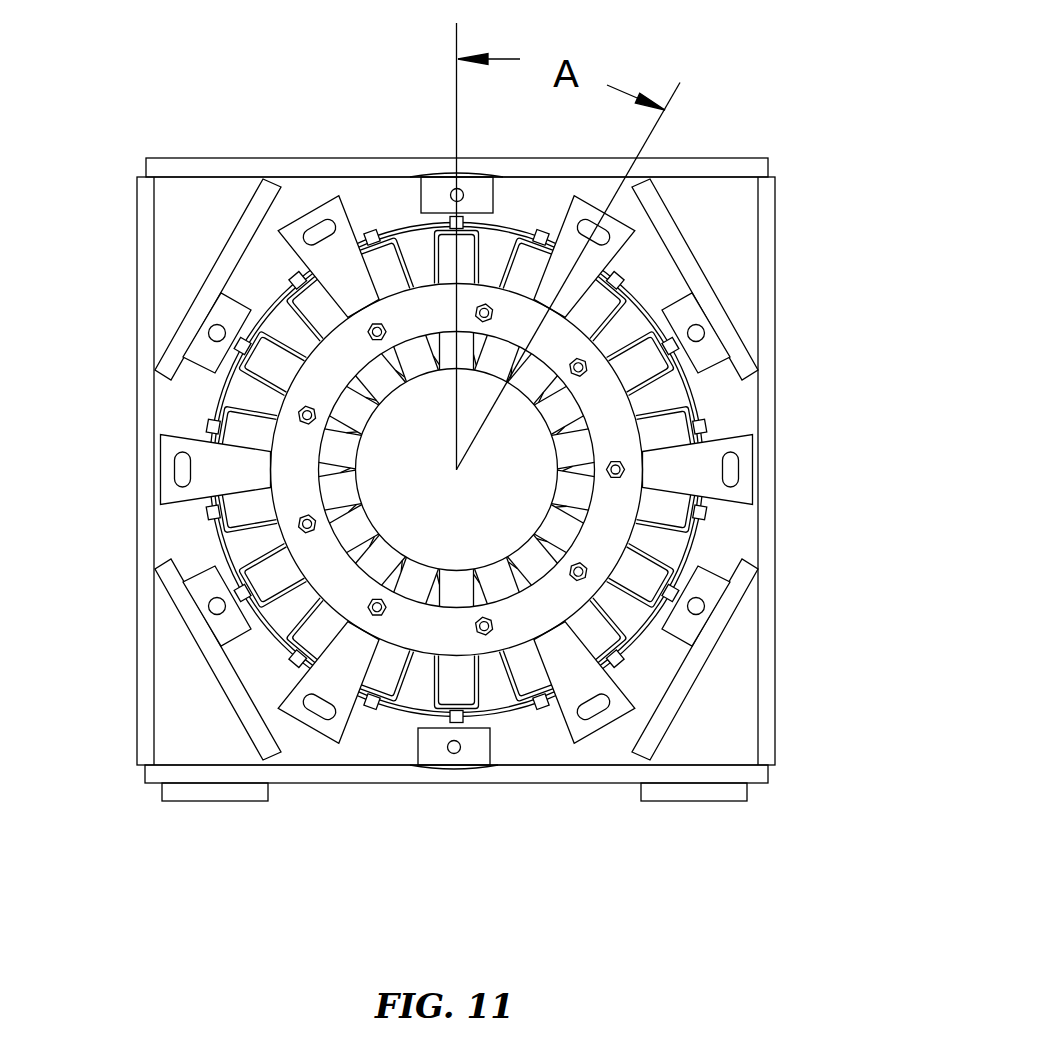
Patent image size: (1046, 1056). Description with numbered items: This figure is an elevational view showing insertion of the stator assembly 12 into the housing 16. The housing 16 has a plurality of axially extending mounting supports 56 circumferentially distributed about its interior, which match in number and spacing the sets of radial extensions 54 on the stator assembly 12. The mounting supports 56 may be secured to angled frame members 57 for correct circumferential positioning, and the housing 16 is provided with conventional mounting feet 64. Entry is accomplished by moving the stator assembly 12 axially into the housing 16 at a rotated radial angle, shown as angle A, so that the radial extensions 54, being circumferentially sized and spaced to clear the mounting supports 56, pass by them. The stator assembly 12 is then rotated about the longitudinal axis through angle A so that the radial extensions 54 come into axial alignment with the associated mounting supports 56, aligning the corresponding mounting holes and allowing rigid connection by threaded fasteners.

The stator assembly 12 is at (263, 360).
The housing 16 is at (683, 158).
The radial extensions 54 is at (573, 743).
The mounting supports 56 is at (696, 567).
The angled frame members 57 is at (655, 747).
The mounting feet 64 is at (257, 802).